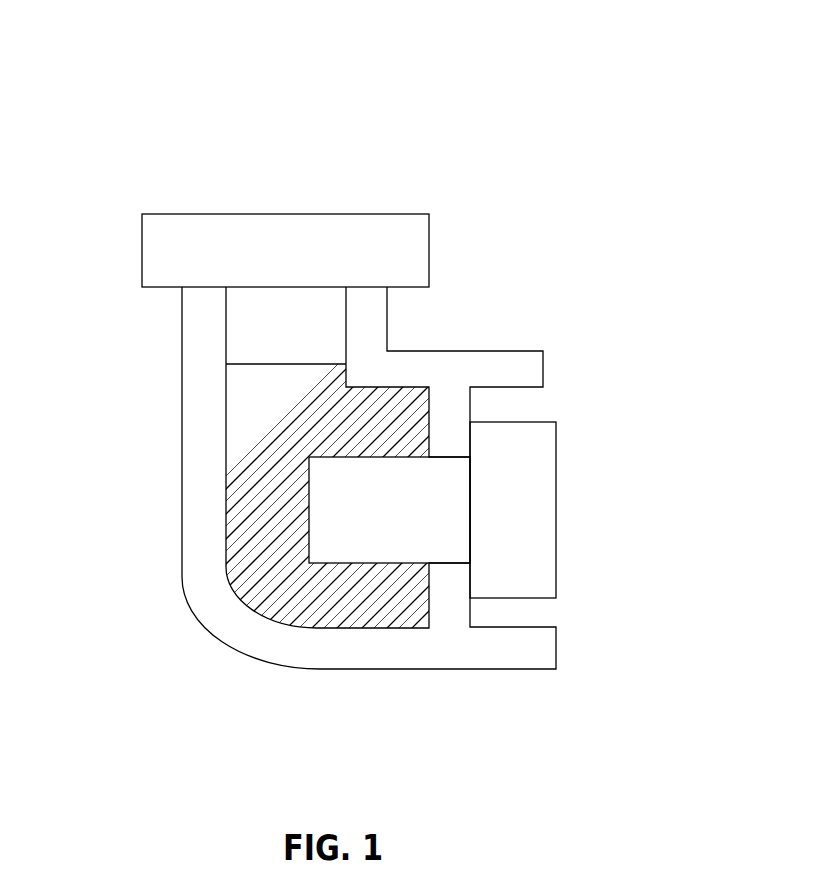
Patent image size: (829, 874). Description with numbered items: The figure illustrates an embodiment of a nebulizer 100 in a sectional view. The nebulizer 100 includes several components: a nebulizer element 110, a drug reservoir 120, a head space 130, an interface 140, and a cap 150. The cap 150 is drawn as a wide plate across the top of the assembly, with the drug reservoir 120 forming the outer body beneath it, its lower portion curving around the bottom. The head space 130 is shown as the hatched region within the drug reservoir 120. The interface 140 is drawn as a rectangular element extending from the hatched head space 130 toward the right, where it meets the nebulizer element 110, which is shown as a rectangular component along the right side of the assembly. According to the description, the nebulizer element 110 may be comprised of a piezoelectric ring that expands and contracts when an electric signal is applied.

The nebulizer 100 is at (466, 72).
The nebulizer element 110 is at (543, 530).
The drug reservoir 120 is at (246, 524).
The head space 130 is at (241, 328).
The interface 140 is at (445, 486).
The cap 150 is at (142, 248).